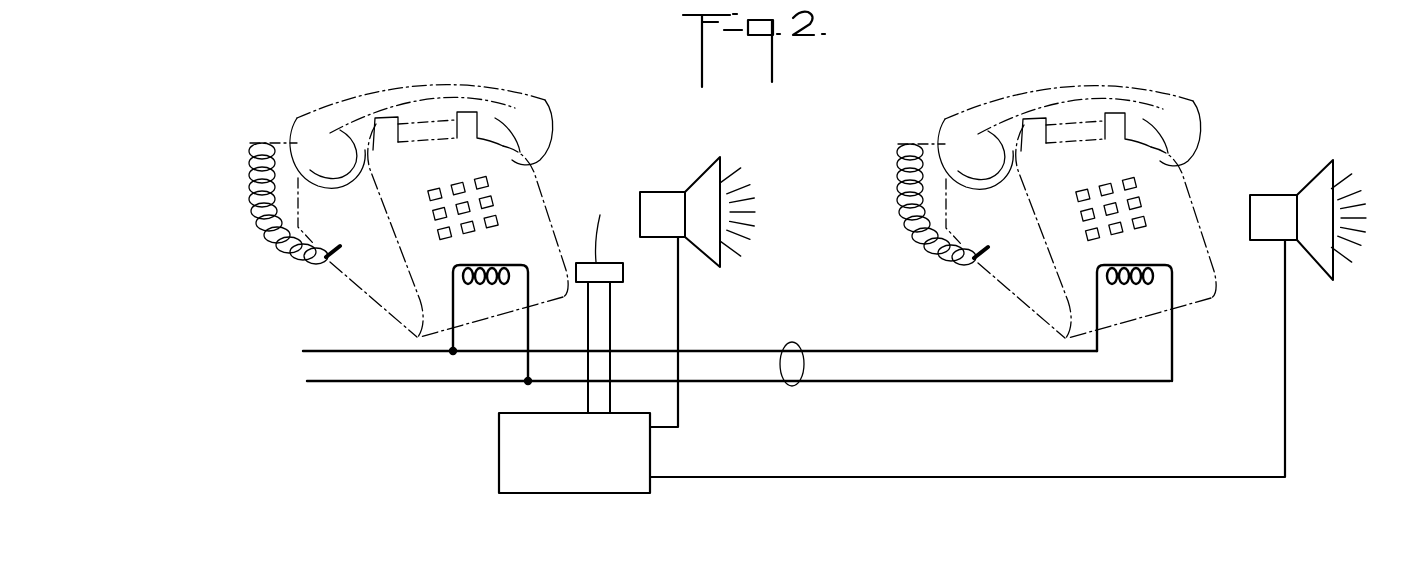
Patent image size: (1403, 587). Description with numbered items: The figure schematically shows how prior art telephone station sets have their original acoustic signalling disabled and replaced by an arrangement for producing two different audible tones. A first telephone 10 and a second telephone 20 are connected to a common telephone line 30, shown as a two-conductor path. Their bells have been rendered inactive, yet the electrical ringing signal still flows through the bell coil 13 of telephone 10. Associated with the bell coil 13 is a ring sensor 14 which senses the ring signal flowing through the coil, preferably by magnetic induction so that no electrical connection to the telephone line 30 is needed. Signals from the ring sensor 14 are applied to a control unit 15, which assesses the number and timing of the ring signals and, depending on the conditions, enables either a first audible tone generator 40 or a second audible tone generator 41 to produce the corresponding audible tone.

The telephone 10 is at (548, 102).
The bell coil 13 is at (510, 267).
The ring sensor 14 is at (620, 284).
The control unit 15 is at (499, 467).
The telephone 20 is at (1003, 103).
The telephone line 30 is at (793, 388).
The first audible tone generator 40 is at (658, 194).
The second audible tone generator 41 is at (1272, 194).